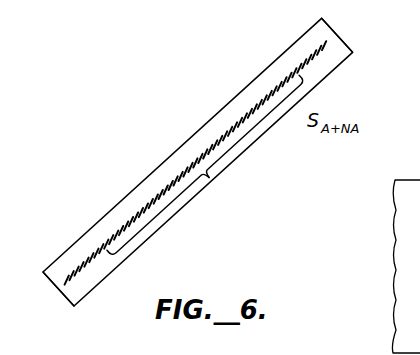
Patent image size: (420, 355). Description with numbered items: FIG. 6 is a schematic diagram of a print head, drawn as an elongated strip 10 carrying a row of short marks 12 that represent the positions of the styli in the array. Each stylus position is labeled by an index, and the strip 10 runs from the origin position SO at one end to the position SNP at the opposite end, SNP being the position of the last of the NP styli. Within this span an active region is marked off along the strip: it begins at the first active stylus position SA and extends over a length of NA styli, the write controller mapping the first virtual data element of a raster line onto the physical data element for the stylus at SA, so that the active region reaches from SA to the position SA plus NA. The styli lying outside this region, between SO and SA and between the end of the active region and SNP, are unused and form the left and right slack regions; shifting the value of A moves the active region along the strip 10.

The strip / elongated member 10 is at (205, 125).
The indicia marks 12 is at (303, 50).
The first stylus position of the active region SA is at (158, 230).
The number of styli in the active region NA is at (255, 139).
The origin end SO is at (73, 297).
The last stylus position of the array SNP is at (354, 58).